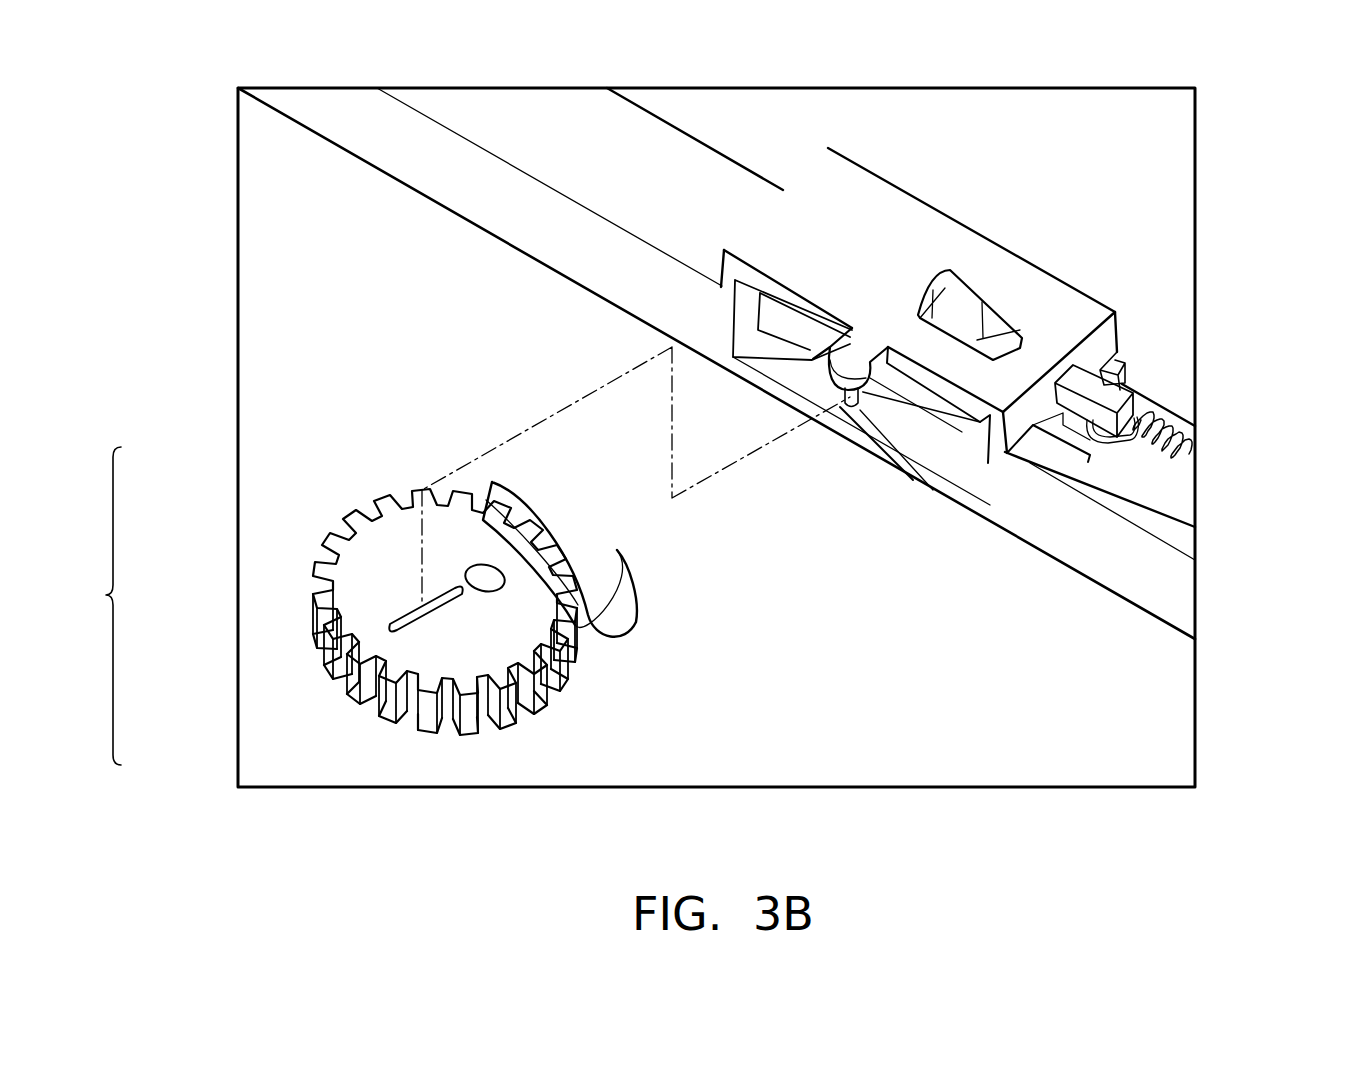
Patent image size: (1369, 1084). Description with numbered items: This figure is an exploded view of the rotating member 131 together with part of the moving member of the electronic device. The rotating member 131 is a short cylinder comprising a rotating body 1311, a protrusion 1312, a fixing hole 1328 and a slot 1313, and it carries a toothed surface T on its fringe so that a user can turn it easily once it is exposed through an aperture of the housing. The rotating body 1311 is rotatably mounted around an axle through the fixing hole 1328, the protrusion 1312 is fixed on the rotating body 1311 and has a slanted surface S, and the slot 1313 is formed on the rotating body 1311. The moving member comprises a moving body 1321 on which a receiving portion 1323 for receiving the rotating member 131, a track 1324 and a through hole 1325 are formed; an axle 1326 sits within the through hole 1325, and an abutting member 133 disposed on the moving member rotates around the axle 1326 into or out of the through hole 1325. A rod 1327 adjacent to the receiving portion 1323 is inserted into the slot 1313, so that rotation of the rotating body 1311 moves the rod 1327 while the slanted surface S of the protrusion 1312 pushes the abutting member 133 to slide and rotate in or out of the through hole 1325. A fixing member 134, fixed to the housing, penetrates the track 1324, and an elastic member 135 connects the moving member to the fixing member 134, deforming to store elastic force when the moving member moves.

The rotating member 131 is at (84, 606).
The rotating body 1311 is at (457, 652).
The protrusion 1312 is at (483, 500).
The slot 1313 is at (395, 623).
The abutting member 133 is at (1016, 333).
The moving body 1321 is at (1112, 597).
The receiving portion 1323 is at (745, 322).
The track 1324 is at (1177, 500).
The through hole 1325 is at (1020, 340).
The axle 1326 is at (982, 302).
The rod 1327 is at (850, 405).
The fixing hole 1328 is at (487, 580).
The fixing member 134 is at (1103, 393).
The elastic member 135 is at (1175, 417).
The toothed surface T is at (450, 732).
The slanted surface S is at (525, 498).